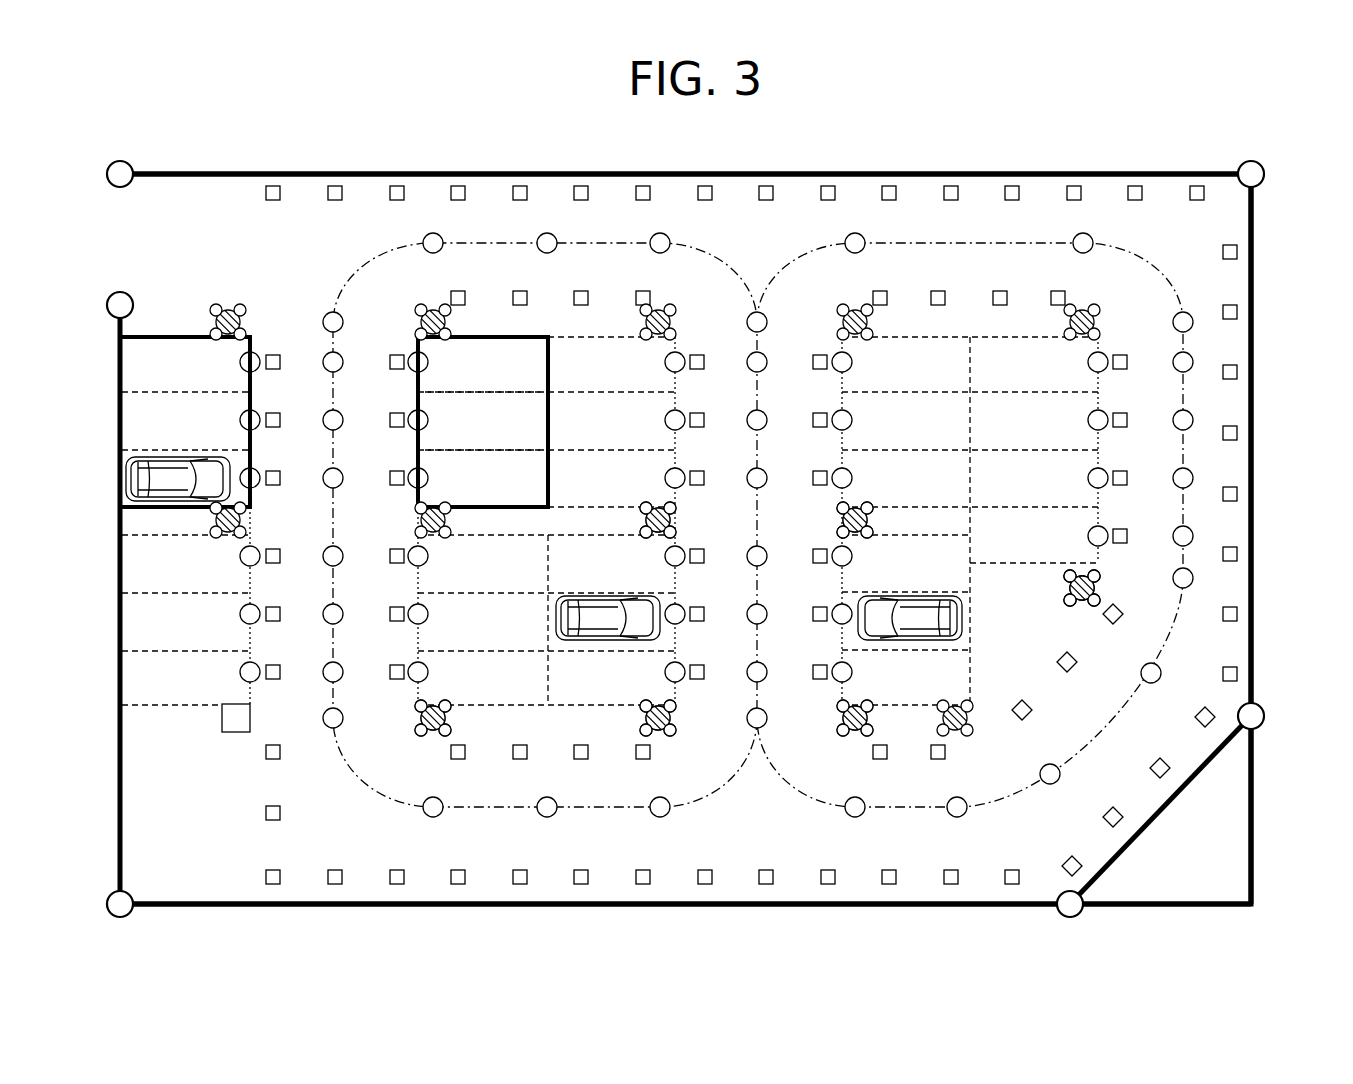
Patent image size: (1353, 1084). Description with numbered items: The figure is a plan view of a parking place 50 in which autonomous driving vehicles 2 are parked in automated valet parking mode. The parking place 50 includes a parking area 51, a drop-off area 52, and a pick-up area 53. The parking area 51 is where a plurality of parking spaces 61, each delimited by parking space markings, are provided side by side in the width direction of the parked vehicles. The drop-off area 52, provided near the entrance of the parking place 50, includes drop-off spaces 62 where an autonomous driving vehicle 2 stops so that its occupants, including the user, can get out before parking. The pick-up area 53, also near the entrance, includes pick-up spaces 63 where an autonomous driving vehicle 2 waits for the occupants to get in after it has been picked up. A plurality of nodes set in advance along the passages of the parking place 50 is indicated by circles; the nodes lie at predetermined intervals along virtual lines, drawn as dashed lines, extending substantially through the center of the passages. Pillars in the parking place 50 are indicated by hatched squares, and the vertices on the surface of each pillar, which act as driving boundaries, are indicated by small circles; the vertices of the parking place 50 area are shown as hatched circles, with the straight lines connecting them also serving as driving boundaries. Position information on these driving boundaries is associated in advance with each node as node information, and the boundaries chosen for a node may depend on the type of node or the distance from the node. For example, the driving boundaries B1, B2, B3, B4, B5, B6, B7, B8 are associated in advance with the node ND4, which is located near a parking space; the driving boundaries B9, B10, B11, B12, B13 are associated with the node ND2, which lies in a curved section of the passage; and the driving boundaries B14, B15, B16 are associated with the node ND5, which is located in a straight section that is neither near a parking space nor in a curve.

The autonomous driving vehicle 2 is at (170, 481).
The parking place 50 is at (719, 522).
The parking area 51 is at (1101, 171).
The drop-off area 52 is at (152, 415).
The pick-up area 53 is at (479, 357).
The parking space 61 is at (612, 335).
The drop-off space 62 is at (135, 352).
The pick-up space 63 is at (530, 425).
The driving boundary B1 is at (645, 534).
The driving boundary B2 is at (675, 532).
The driving boundary B3 is at (645, 720).
The driving boundary B4 is at (673, 722).
The driving boundary B5 is at (846, 519).
The driving boundary B6 is at (843, 534).
The driving boundary B7 is at (862, 712).
The driving boundary B8 is at (846, 734).
The driving boundary B9 is at (1072, 578).
The driving boundary B10 is at (1071, 600).
The driving boundary B11 is at (1125, 580).
The driving boundary B12 is at (1254, 598).
The driving boundary B13 is at (1205, 768).
The driving boundary B14 is at (452, 728).
The driving boundary B15 is at (418, 728).
The driving boundary B16 is at (560, 907).
The node ND2 is at (1162, 672).
The node ND4 is at (706, 600).
The node ND5 is at (443, 815).